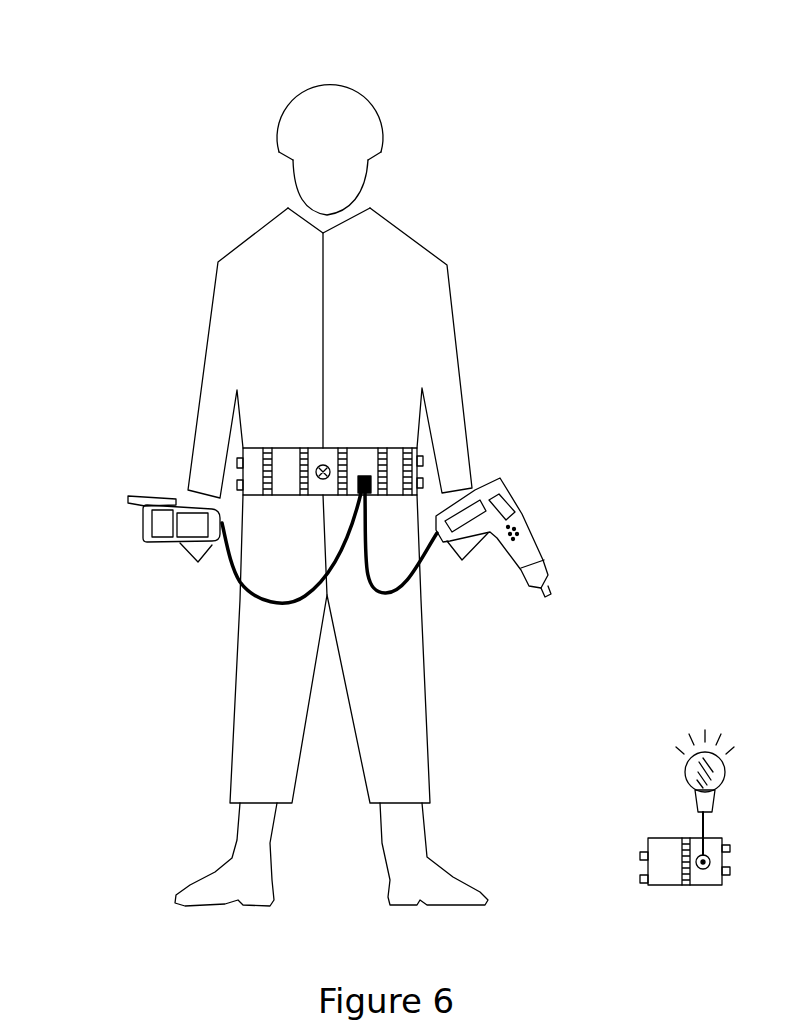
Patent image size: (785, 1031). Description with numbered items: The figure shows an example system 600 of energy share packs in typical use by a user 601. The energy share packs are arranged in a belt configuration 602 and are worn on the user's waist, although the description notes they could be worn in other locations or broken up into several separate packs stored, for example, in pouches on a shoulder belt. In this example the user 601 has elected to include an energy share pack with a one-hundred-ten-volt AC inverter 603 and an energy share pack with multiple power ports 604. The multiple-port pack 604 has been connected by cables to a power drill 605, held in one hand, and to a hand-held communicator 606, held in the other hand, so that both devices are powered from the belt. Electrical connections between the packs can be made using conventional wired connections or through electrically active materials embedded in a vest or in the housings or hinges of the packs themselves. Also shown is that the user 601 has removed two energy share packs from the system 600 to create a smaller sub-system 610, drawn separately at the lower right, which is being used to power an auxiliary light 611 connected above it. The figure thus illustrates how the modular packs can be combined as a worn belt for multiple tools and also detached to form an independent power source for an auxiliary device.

The system 600 is at (378, 479).
The user 601 is at (360, 328).
The belt configuration 602 is at (285, 470).
The energy share pack with 110VAC inverter 603 is at (330, 467).
The energy share pack with multiple power ports 604 is at (366, 466).
The power drill 605 is at (523, 514).
The hand-held communicator 606 is at (160, 522).
The sub-system 610 is at (685, 875).
The auxiliary light 611 is at (687, 793).